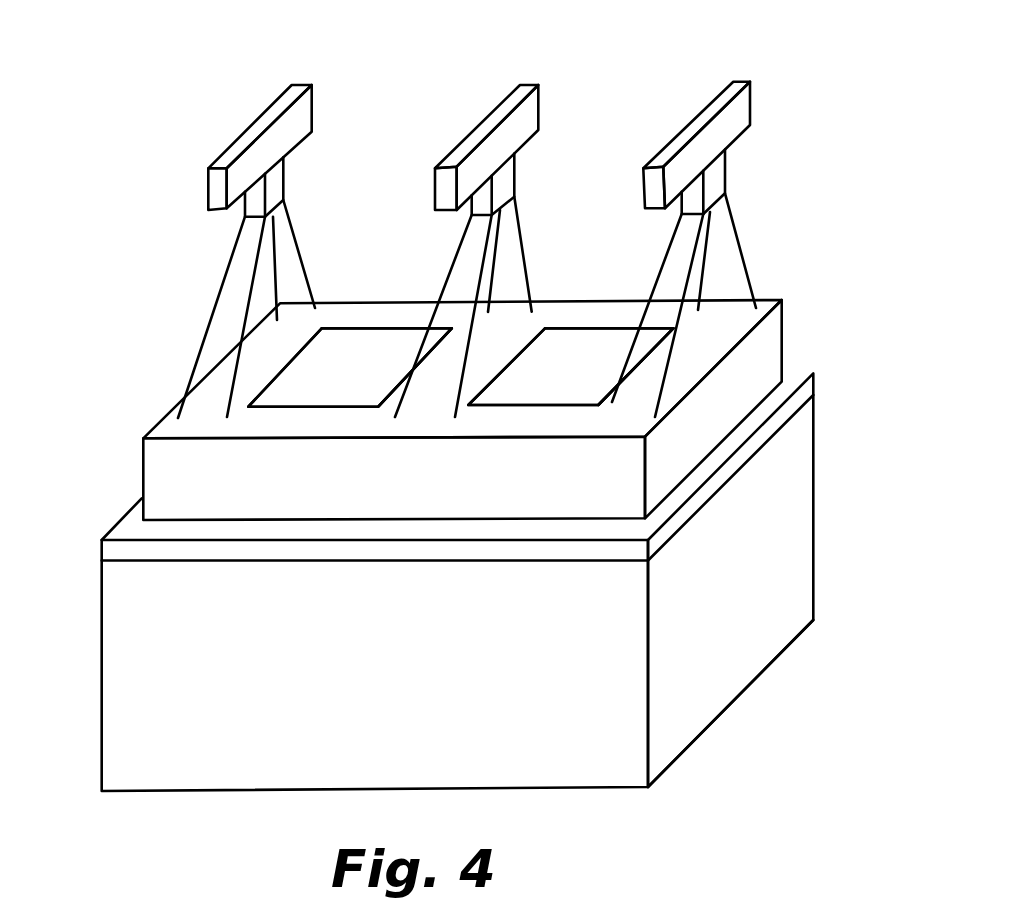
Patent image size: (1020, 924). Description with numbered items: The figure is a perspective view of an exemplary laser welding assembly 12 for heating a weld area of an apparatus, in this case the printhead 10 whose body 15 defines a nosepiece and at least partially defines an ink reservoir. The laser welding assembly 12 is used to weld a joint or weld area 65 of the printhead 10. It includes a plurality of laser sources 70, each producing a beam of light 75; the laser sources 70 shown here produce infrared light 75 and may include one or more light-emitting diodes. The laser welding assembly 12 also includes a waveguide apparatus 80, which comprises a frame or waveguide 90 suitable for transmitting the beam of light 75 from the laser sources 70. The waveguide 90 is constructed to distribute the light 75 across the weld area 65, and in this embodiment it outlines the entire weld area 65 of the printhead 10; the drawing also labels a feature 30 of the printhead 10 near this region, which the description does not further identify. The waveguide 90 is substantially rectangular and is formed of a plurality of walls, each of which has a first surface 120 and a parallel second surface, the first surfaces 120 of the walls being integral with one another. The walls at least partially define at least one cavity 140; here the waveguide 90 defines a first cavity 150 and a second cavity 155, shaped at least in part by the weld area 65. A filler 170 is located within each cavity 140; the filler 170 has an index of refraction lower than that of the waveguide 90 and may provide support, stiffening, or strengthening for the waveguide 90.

The printhead 10 is at (817, 507).
The laser welding assembly 12 is at (858, 80).
The body 15 is at (747, 658).
The top plate 30 is at (807, 388).
The weld area 65 is at (181, 551).
The laser source 70 is at (312, 110).
The beam of light 75 is at (295, 220).
The waveguide apparatus 80 is at (142, 453).
The waveguide 90 is at (767, 330).
The first surface 120 is at (294, 432).
The cavity 140 is at (350, 327).
The first cavity 150 is at (415, 327).
The second cavity 155 is at (618, 318).
The filler 170 is at (362, 392).